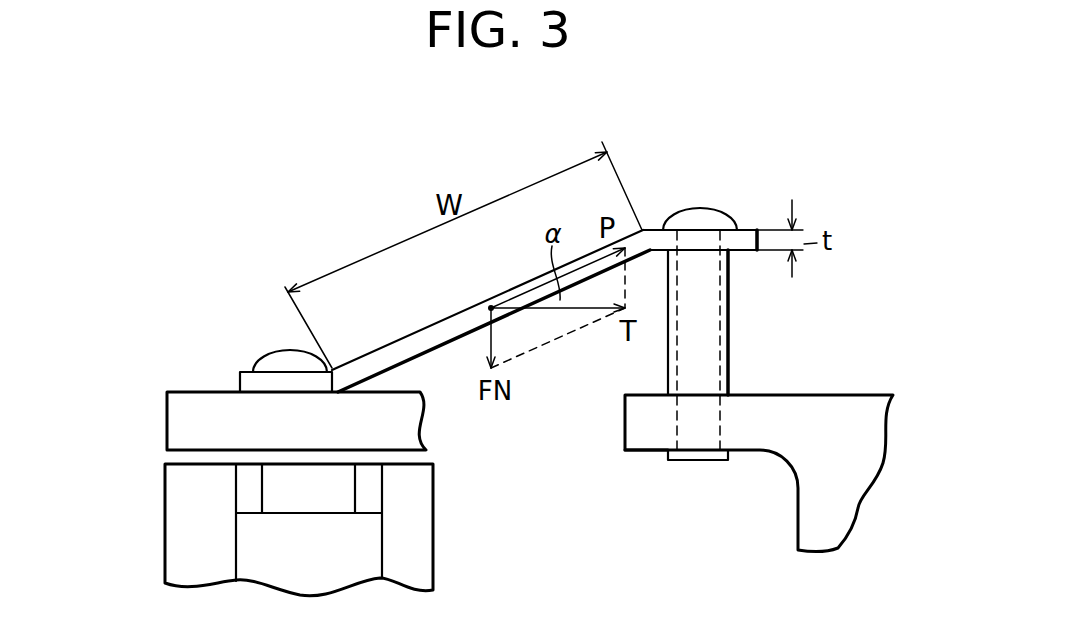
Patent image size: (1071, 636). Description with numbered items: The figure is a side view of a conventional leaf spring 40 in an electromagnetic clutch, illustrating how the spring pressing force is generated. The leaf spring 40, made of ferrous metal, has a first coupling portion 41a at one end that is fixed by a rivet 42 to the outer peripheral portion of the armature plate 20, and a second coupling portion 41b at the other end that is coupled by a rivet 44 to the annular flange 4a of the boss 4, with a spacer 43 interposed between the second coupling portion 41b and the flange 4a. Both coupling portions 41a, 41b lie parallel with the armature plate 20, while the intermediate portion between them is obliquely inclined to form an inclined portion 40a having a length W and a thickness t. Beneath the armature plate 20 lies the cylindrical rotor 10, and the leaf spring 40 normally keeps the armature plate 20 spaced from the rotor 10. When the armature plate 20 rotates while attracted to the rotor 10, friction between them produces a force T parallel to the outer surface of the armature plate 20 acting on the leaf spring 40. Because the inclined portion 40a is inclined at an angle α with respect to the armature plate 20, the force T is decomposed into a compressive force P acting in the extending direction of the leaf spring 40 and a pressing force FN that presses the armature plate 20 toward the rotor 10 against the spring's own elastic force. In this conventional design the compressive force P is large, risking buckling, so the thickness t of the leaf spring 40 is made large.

The boss 4 is at (853, 393).
The annular flange 4a is at (640, 437).
The cylindrical rotor 10 is at (417, 553).
The armature plate 20 is at (175, 418).
The leaf spring 40 is at (557, 323).
The inclined portion 40a is at (413, 343).
The first coupling portion 41a is at (240, 380).
The second coupling portion 41b is at (746, 240).
The rivet 42 is at (268, 360).
The spacer 43 is at (728, 313).
The rivet 44 is at (700, 210).